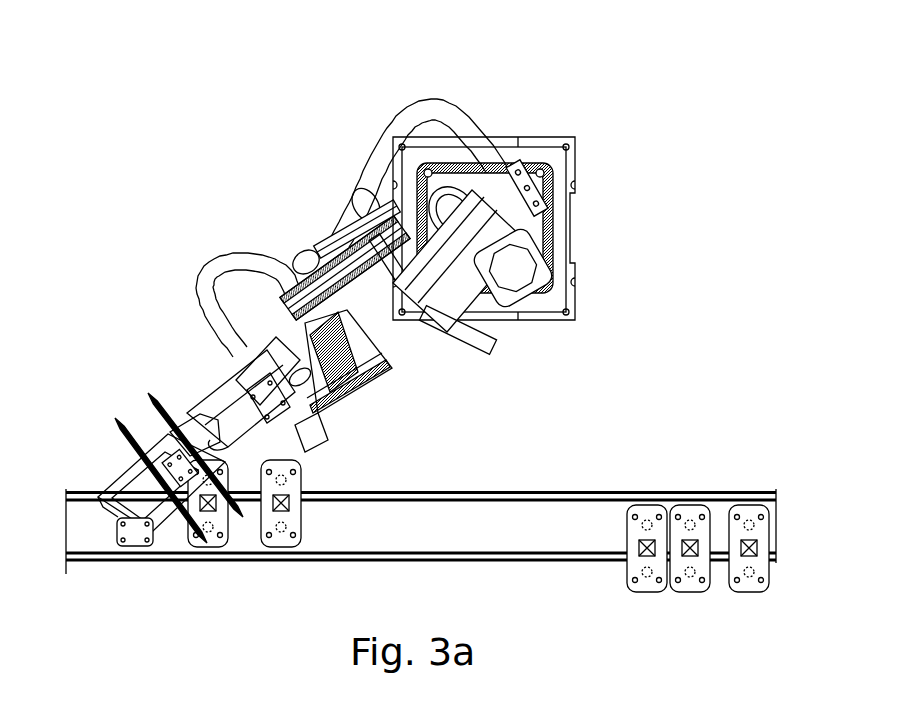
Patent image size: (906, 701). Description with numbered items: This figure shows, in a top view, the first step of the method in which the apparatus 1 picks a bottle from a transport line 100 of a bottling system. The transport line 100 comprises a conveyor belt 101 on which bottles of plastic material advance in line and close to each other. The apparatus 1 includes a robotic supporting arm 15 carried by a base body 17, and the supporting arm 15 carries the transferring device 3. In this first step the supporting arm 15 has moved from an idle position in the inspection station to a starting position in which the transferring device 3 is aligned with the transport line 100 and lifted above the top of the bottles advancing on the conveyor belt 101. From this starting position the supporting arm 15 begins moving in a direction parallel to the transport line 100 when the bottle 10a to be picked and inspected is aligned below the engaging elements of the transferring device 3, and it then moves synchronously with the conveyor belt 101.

The apparatus 1 is at (601, 129).
The transferring device 3 is at (103, 481).
The supporting arm 15 is at (230, 415).
The base body 17 is at (575, 230).
The transport line 100 is at (709, 452).
The conveyor belt 101 is at (535, 508).
The bottle 10a is at (124, 565).